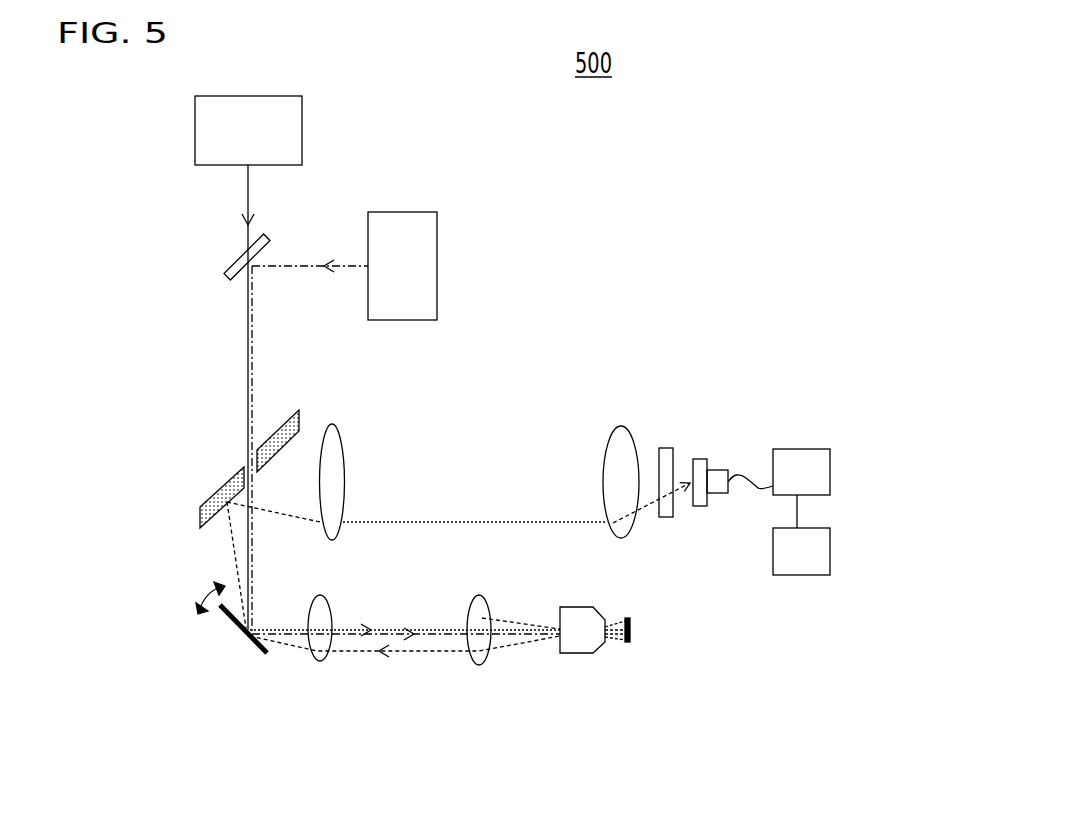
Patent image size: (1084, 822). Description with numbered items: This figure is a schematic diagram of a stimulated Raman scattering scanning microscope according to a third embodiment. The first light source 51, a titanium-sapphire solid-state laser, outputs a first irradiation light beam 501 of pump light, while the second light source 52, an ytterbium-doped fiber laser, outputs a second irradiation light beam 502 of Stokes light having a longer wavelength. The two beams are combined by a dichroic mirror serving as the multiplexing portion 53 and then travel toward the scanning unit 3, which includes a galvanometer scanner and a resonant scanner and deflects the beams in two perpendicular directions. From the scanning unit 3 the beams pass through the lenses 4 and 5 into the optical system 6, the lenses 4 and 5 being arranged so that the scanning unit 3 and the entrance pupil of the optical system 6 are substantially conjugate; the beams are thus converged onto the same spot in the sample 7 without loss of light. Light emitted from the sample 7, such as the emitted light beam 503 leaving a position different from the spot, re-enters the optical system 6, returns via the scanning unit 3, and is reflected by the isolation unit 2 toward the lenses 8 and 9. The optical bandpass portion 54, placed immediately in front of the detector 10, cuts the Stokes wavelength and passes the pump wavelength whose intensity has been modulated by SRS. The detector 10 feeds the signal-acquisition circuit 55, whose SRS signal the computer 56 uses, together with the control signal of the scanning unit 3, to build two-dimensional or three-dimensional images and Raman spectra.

The first light source 51 is at (302, 118).
The first irradiation light beam 501 is at (248, 190).
The multiplexing portion 53 is at (232, 265).
The second irradiation light beam 502 is at (305, 262).
The second light source 52 is at (437, 242).
The isolation unit 2 is at (212, 497).
The lens 8 is at (332, 424).
The lens 9 is at (621, 426).
The optical bandpass portion 54 is at (666, 518).
The detector 10 is at (700, 459).
The signal-acquisition circuit 55 is at (802, 449).
The computer 56 is at (802, 575).
The scanning unit 3 is at (236, 628).
The lens 4 is at (320, 662).
The emitted light beam 503 is at (413, 655).
The lens 5 is at (480, 665).
The optical system 6 is at (578, 654).
The sample 7 is at (628, 643).